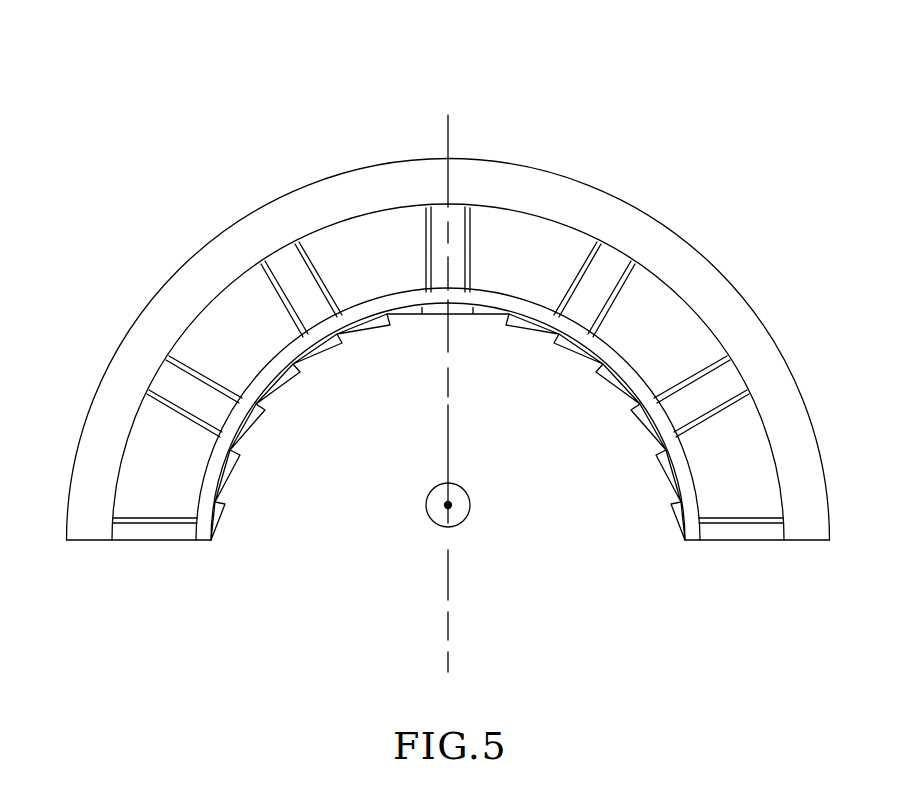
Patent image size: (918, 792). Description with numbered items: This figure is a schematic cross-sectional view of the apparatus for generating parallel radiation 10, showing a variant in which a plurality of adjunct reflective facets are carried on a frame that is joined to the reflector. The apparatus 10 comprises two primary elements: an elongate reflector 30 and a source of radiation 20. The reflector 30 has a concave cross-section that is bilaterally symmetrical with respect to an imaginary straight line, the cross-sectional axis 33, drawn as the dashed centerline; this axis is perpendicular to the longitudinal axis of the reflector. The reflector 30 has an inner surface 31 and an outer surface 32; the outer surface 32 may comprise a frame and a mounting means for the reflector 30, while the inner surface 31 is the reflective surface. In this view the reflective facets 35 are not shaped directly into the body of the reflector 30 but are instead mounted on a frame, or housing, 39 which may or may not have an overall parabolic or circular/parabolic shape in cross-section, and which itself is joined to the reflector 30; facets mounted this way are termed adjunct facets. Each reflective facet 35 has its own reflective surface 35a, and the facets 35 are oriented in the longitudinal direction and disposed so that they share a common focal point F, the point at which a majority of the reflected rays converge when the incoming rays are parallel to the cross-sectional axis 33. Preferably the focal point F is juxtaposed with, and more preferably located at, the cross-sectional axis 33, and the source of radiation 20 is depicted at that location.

The apparatus for generating parallel radiation 10 is at (446, 361).
The source of radiation 20 is at (463, 525).
The reflector 30 is at (469, 342).
The inner surface 31 is at (480, 338).
The outer surface 32 is at (610, 186).
The cross-sectional axis 33 is at (450, 132).
The reflective facets 35 is at (475, 471).
The reflective surface 35a is at (660, 514).
The frame 39 is at (183, 393).
The common focal point F is at (446, 500).